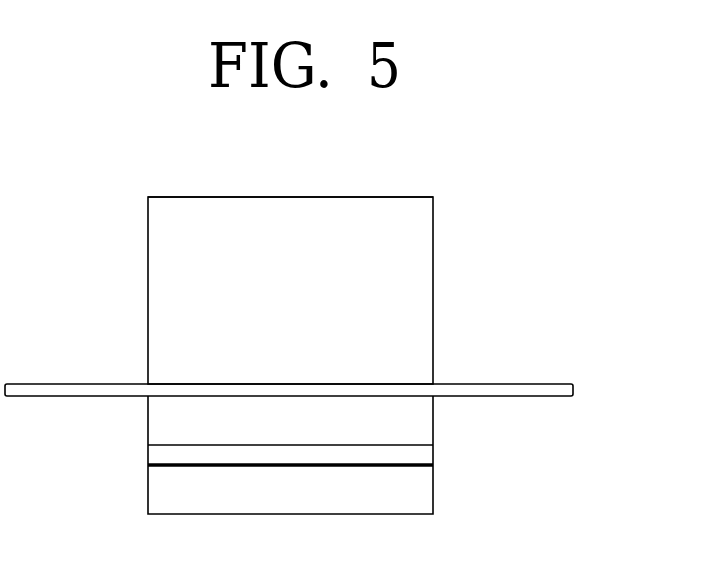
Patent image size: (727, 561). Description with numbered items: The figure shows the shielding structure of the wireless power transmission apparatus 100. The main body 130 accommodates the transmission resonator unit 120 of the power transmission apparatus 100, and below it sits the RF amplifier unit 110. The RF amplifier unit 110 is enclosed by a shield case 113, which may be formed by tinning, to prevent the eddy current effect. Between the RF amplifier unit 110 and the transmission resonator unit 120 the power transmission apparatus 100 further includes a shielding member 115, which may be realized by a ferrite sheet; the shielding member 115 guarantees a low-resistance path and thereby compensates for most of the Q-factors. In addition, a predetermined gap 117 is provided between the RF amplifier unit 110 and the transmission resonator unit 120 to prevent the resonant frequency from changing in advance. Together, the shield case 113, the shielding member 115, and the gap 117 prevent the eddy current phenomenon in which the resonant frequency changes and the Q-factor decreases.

The power transmission apparatus 100 is at (88, 147).
The RF amplifier unit 110 is at (425, 493).
The shield case 113 is at (147, 466).
The shielding member 115 is at (147, 453).
The gap 117 is at (425, 420).
The transmission resonator unit 120 is at (426, 272).
The main body 130 is at (357, 196).